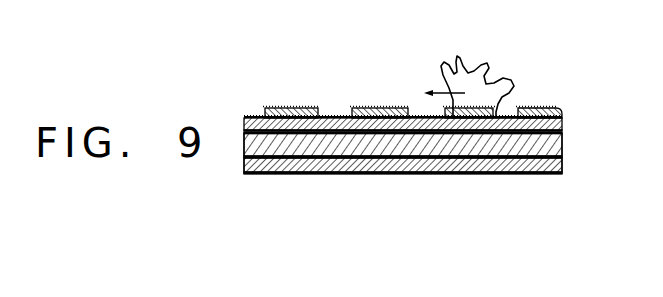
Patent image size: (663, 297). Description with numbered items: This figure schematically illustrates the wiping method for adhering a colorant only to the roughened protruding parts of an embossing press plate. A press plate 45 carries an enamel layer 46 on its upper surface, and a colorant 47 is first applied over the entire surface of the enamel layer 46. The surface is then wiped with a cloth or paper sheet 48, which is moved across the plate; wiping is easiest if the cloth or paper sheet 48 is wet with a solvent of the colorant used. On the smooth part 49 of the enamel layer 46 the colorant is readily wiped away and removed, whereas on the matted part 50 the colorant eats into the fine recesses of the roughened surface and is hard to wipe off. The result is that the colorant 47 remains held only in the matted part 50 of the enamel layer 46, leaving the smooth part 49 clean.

The press plate 45 is at (560, 150).
The enamel layer 46 is at (563, 128).
The colorant 47 is at (322, 108).
The cloth or paper sheet 48 is at (457, 56).
The smooth part 49 is at (512, 117).
The matted part 50 is at (545, 112).